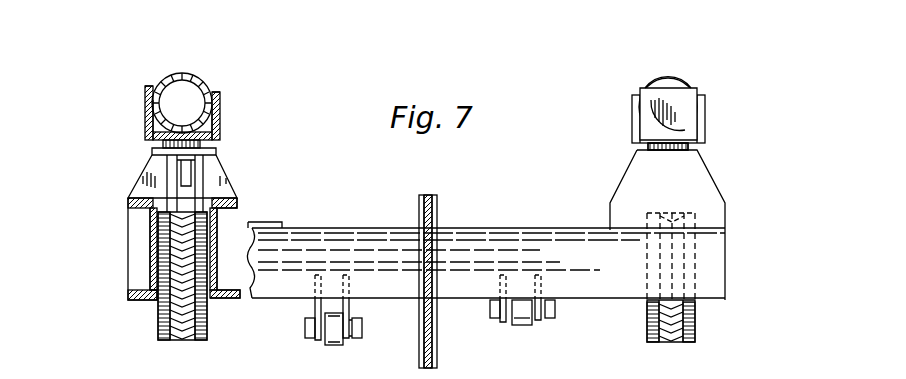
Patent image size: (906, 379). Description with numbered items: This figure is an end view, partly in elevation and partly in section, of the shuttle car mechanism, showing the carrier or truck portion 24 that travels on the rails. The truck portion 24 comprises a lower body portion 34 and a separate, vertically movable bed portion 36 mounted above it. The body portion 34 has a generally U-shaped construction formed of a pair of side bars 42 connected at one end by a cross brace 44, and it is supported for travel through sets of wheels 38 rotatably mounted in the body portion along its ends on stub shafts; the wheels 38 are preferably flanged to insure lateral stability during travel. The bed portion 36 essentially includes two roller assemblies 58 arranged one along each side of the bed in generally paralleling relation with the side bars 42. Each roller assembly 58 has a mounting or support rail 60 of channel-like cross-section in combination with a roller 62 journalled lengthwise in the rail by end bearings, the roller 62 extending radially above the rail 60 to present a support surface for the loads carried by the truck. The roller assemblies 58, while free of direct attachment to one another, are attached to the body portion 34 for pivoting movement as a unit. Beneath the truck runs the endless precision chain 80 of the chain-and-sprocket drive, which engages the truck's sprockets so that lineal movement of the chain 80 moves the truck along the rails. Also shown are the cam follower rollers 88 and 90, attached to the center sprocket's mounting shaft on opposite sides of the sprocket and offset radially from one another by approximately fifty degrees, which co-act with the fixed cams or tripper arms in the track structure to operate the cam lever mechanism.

The carrier or truck portion 24 is at (124, 162).
The body portion 34 is at (122, 272).
The bed portion 36 is at (247, 165).
The wheels 38 is at (166, 320).
The side bars 42 is at (150, 230).
The cross brace 44 is at (708, 266).
The roller assemblies 58 is at (139, 103).
The mounting or support rail 60 is at (222, 106).
The roller 62 is at (190, 76).
The endless precision chain 80 is at (428, 350).
The cam follower roller 88 is at (330, 344).
The cam follower roller 90 is at (523, 336).